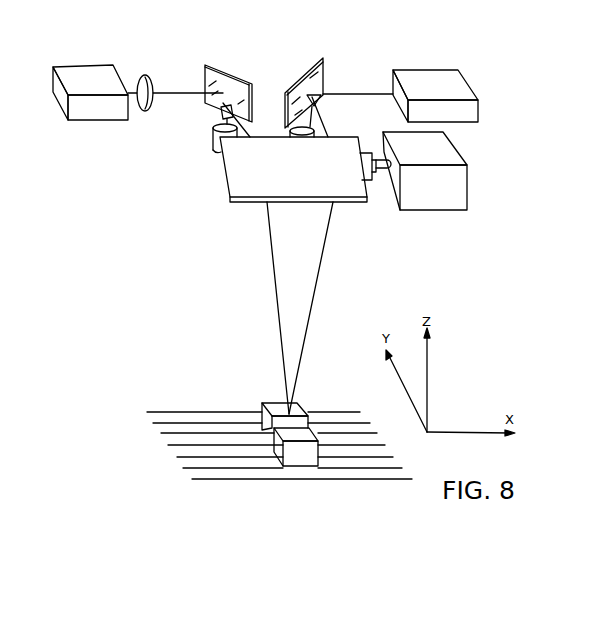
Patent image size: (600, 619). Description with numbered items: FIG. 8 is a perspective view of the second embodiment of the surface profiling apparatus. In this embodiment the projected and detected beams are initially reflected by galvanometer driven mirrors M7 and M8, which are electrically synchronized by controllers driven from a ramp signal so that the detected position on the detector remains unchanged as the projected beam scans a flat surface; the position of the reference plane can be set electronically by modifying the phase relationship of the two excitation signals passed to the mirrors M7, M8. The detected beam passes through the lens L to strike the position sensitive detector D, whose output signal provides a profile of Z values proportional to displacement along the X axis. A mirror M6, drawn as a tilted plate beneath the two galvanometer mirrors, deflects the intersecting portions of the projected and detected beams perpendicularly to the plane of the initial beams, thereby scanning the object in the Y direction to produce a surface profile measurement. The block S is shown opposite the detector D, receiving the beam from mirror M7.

The position sensitive detector D is at (90, 92).
The lens L is at (152, 110).
The galvanometer driven mirror M8 is at (240, 88).
The galvanometer driven mirror M7 is at (299, 90).
The sensor / detector S is at (435, 96).
The mirror M6 is at (232, 163).